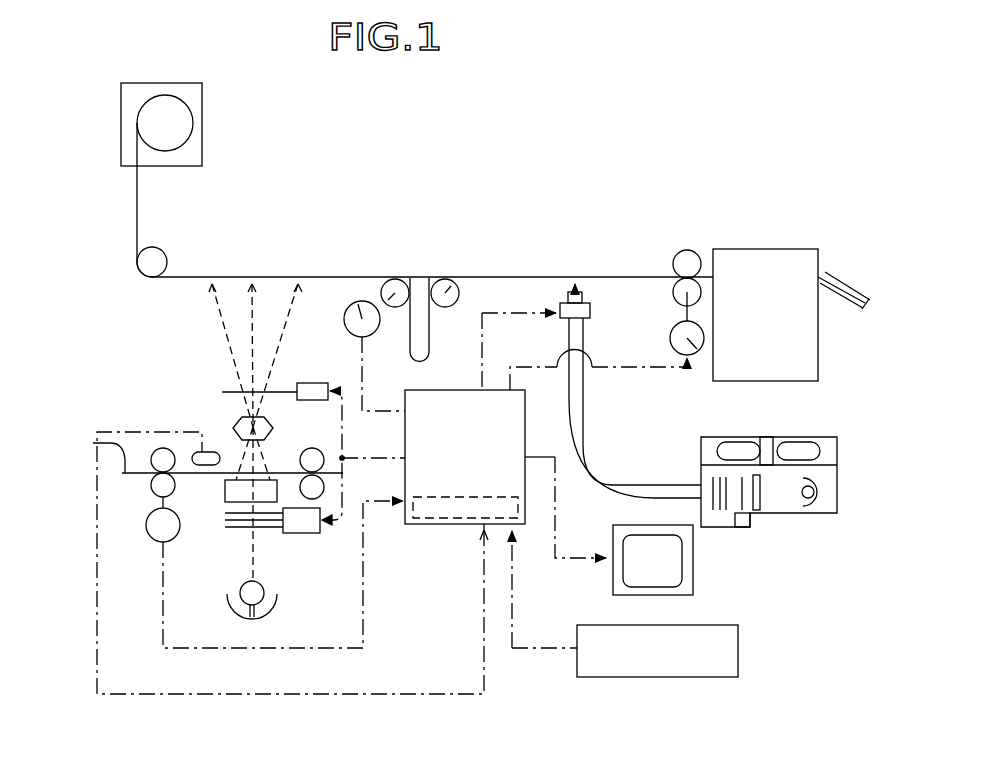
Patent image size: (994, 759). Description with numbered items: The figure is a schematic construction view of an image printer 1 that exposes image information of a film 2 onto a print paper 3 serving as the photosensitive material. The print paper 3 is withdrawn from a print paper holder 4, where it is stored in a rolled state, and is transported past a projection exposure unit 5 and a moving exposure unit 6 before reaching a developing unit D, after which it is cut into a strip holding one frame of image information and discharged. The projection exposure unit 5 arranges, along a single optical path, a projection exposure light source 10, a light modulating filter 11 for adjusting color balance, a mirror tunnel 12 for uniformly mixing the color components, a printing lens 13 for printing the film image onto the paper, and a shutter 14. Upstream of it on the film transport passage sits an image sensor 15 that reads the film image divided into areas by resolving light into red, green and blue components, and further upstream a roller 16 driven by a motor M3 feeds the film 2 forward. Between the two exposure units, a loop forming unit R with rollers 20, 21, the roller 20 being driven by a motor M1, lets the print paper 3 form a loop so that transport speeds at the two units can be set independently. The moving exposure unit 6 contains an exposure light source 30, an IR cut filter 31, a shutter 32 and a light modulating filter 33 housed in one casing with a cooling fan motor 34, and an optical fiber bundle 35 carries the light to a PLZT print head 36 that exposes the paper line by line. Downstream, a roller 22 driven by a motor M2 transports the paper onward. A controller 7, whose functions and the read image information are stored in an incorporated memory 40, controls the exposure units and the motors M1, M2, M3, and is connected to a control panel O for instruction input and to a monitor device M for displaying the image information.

The image printer 1 is at (473, 185).
The film 2 is at (93, 443).
The print paper 3 is at (136, 222).
The print paper holder 4 is at (202, 137).
The projection exposure unit 5 is at (214, 620).
The moving exposure unit 6 is at (575, 275).
The controller 7 is at (470, 526).
The projection exposure light source 10 is at (240, 593).
The light modulating filter 11 is at (274, 534).
The mirror tunnel 12 is at (225, 500).
The printing lens 13 is at (233, 427).
The shutter 14 is at (223, 391).
The image sensor 15 is at (197, 465).
The roller 16 is at (150, 462).
The roller 20 is at (396, 277).
The roller 21 is at (449, 286).
The roller 22 is at (677, 281).
The exposure light source 30 is at (801, 501).
The IR cut filter 31 is at (762, 498).
The shutter 32 is at (742, 493).
The light modulating filter 33 is at (703, 477).
The cooling fan motor 34 is at (807, 442).
The optical fiber bundle 35 is at (581, 437).
The PLZT print head 36 is at (592, 310).
The memory 40 is at (437, 520).
The motor M1 is at (350, 302).
The motor M2 is at (697, 346).
The motor M3 is at (146, 528).
The loop forming unit R is at (420, 275).
The developing unit D is at (775, 249).
The monitor device M is at (613, 587).
The control panel O is at (738, 652).